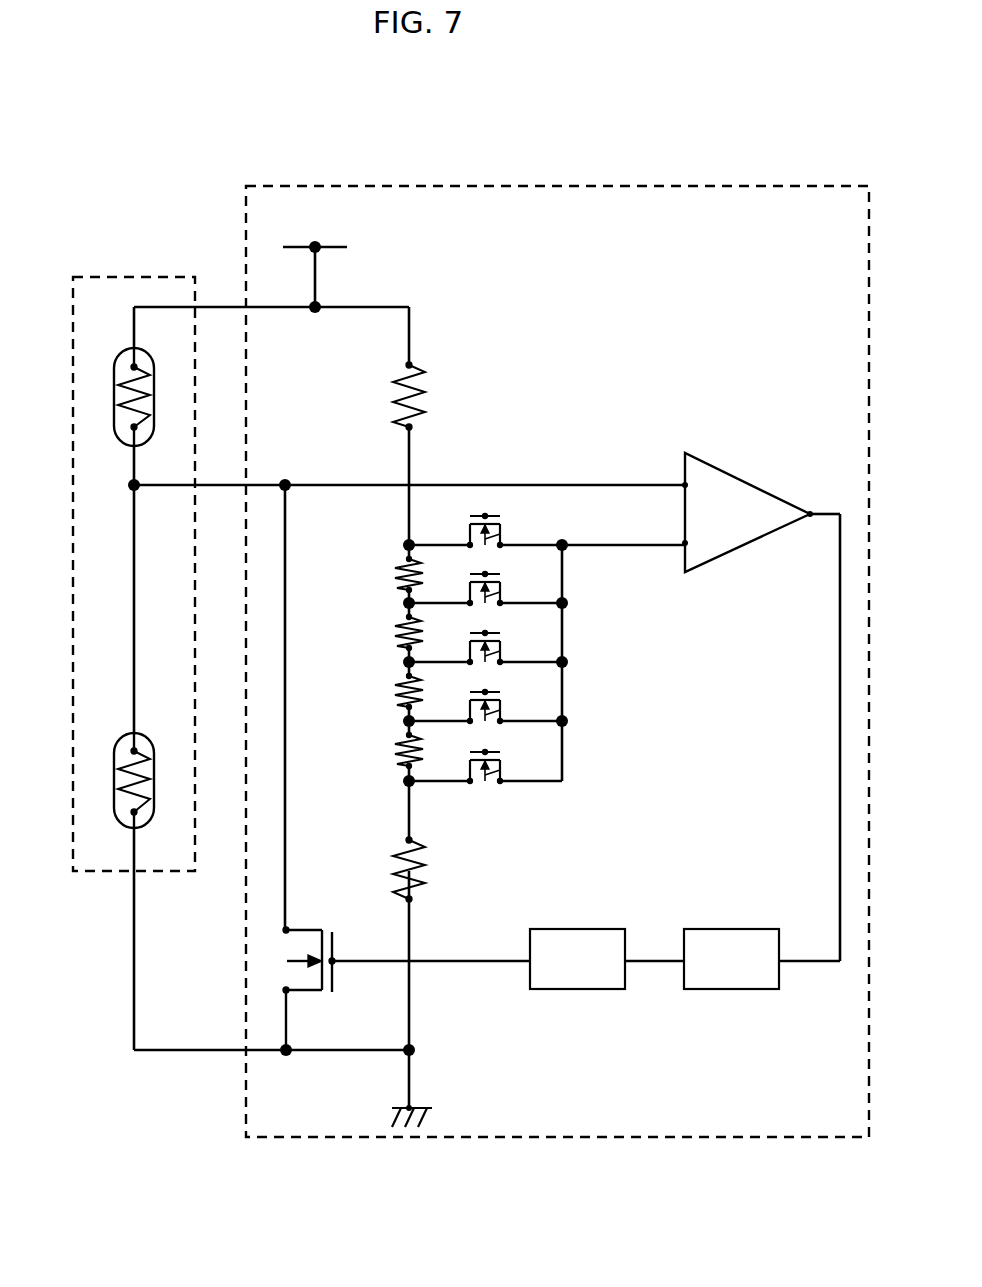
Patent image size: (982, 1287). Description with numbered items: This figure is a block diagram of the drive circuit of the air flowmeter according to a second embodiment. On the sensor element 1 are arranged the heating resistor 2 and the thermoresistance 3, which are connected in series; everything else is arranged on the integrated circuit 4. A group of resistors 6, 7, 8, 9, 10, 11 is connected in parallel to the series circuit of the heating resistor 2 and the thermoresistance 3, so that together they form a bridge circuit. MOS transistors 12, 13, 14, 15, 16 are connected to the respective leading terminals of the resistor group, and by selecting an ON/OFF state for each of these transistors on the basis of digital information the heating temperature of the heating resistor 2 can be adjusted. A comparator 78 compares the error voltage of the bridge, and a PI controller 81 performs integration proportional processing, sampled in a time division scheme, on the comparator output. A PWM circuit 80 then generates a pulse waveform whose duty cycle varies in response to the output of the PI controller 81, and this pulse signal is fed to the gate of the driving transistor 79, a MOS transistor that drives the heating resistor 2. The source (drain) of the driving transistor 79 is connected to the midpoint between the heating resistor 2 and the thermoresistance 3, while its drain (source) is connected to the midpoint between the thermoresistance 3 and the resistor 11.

The sensor element 1 is at (88, 276).
The heating resistor 2 is at (118, 400).
The thermoresistance 3 is at (120, 780).
The integrated circuit 4 is at (595, 185).
The resistor 6 is at (420, 388).
The resistor 7 is at (402, 575).
The resistor 8 is at (402, 635).
The resistor 9 is at (402, 693).
The resistor 10 is at (402, 753).
The resistor 11 is at (418, 873).
The MOS transistor 12 is at (500, 535).
The MOS transistor 13 is at (500, 593).
The MOS transistor 14 is at (500, 652).
The MOS transistor 15 is at (500, 711).
The MOS transistor 16 is at (500, 771).
The comparator 78 is at (732, 513).
The driving transistor 79 is at (320, 930).
The PWM circuit 80 is at (587, 940).
The PI controller 81 is at (733, 938).